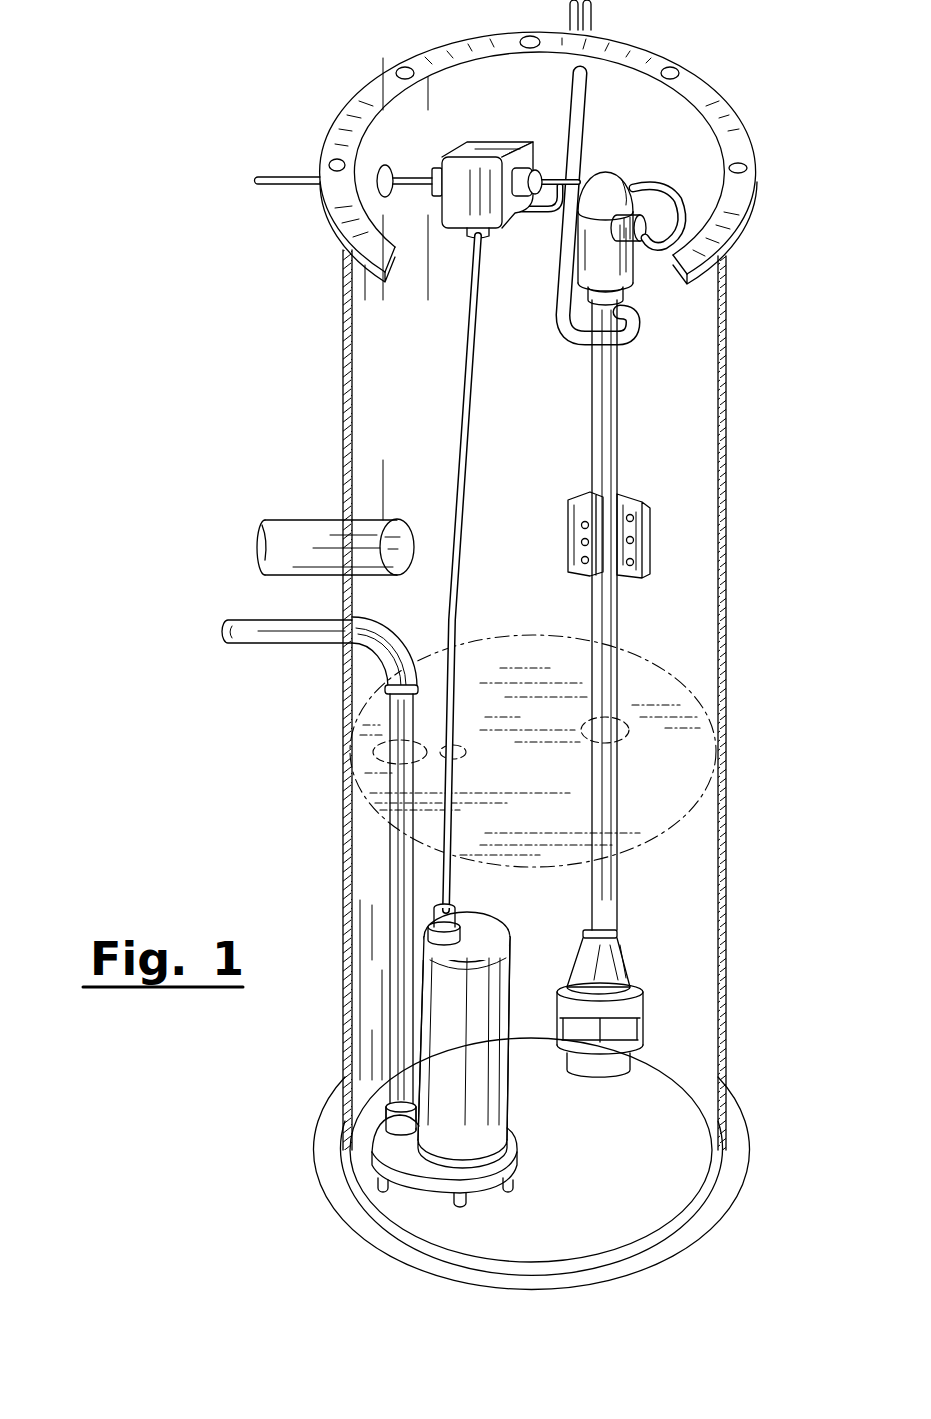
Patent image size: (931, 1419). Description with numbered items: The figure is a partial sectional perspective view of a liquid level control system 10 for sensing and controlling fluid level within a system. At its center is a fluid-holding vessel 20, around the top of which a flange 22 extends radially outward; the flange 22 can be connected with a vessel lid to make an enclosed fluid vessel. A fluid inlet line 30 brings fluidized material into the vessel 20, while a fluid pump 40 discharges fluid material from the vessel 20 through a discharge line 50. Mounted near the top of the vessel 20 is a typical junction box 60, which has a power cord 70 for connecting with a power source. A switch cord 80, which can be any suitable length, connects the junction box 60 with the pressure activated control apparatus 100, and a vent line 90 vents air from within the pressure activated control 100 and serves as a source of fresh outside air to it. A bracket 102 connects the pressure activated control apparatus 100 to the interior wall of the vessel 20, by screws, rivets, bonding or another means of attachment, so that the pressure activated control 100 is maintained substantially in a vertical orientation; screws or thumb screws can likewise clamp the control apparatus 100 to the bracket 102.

The liquid level control system 10 is at (296, 285).
The fluid-holding vessel 20 is at (723, 525).
The flange 22 is at (738, 132).
The fluid inlet line 30 is at (308, 520).
The fluid pump 40 is at (497, 1103).
The discharge line 50 is at (296, 644).
The junction box 60 is at (508, 152).
The power cord 70 is at (297, 177).
The switch cord 80 is at (740, 215).
The vent line 90 is at (577, 330).
The pressure activated control apparatus 100 is at (658, 425).
The bracket 102 is at (650, 540).